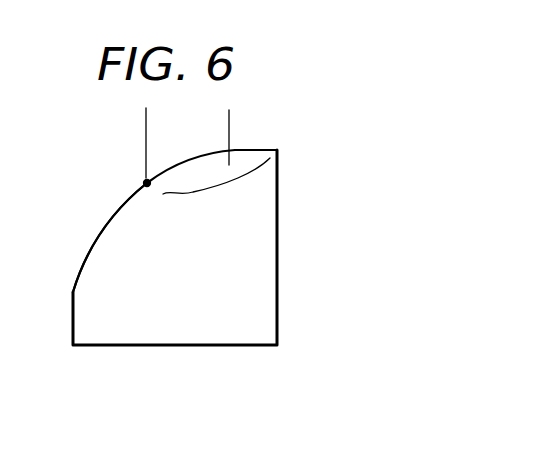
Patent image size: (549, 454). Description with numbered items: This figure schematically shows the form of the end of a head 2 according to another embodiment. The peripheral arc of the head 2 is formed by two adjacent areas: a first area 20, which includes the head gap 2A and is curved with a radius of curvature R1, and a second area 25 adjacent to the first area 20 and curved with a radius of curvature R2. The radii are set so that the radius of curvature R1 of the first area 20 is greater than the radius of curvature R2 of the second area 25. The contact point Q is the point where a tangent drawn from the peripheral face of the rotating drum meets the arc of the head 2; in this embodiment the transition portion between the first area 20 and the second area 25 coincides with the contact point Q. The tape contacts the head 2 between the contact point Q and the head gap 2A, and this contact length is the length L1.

The head 2 is at (287, 262).
The head gap 2A is at (232, 153).
The first area 20 is at (216, 192).
The second area 25 is at (103, 270).
The contact point Q is at (146, 183).
The contact length L1 is at (229, 122).
The radius of curvature of first area R1 is at (238, 265).
The radius of curvature of second area R2 is at (172, 293).